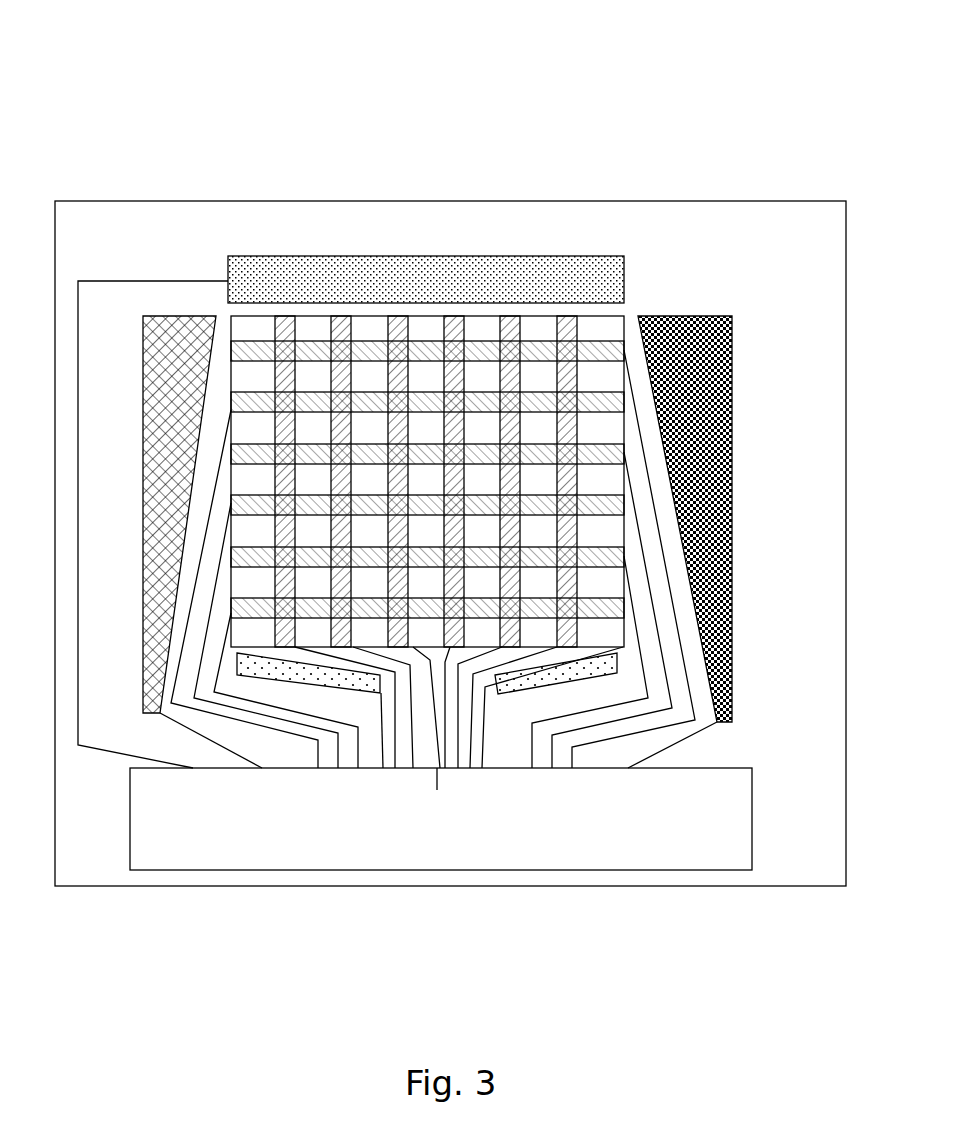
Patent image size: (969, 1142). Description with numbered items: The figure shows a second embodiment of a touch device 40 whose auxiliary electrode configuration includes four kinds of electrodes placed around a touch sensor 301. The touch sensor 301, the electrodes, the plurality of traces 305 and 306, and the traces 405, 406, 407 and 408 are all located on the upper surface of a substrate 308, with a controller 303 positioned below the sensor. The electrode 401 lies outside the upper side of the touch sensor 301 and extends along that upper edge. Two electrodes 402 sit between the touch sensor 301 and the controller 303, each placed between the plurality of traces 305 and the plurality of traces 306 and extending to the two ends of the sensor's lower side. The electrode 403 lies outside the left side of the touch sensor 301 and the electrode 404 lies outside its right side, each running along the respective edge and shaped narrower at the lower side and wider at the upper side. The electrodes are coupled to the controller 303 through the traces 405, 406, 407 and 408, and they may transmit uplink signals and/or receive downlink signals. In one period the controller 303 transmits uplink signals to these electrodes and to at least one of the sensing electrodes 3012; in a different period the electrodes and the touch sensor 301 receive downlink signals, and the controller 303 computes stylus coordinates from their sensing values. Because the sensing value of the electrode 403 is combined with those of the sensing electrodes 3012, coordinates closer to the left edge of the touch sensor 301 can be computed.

The touch device 40 is at (790, 105).
The substrate 308 is at (847, 516).
The controller 303 is at (742, 832).
The electrode 401 is at (425, 272).
The trace 405 is at (103, 752).
The electrode 403 is at (150, 460).
The electrode 404 is at (722, 454).
The touch sensor 301 is at (427, 431).
The sensing electrode 3012 is at (288, 322).
The electrode 402 is at (300, 678).
The trace 407 is at (223, 752).
The trace 408 is at (683, 743).
The trace 406 is at (395, 750).
The trace 306 is at (437, 792).
The trace 305 is at (568, 750).